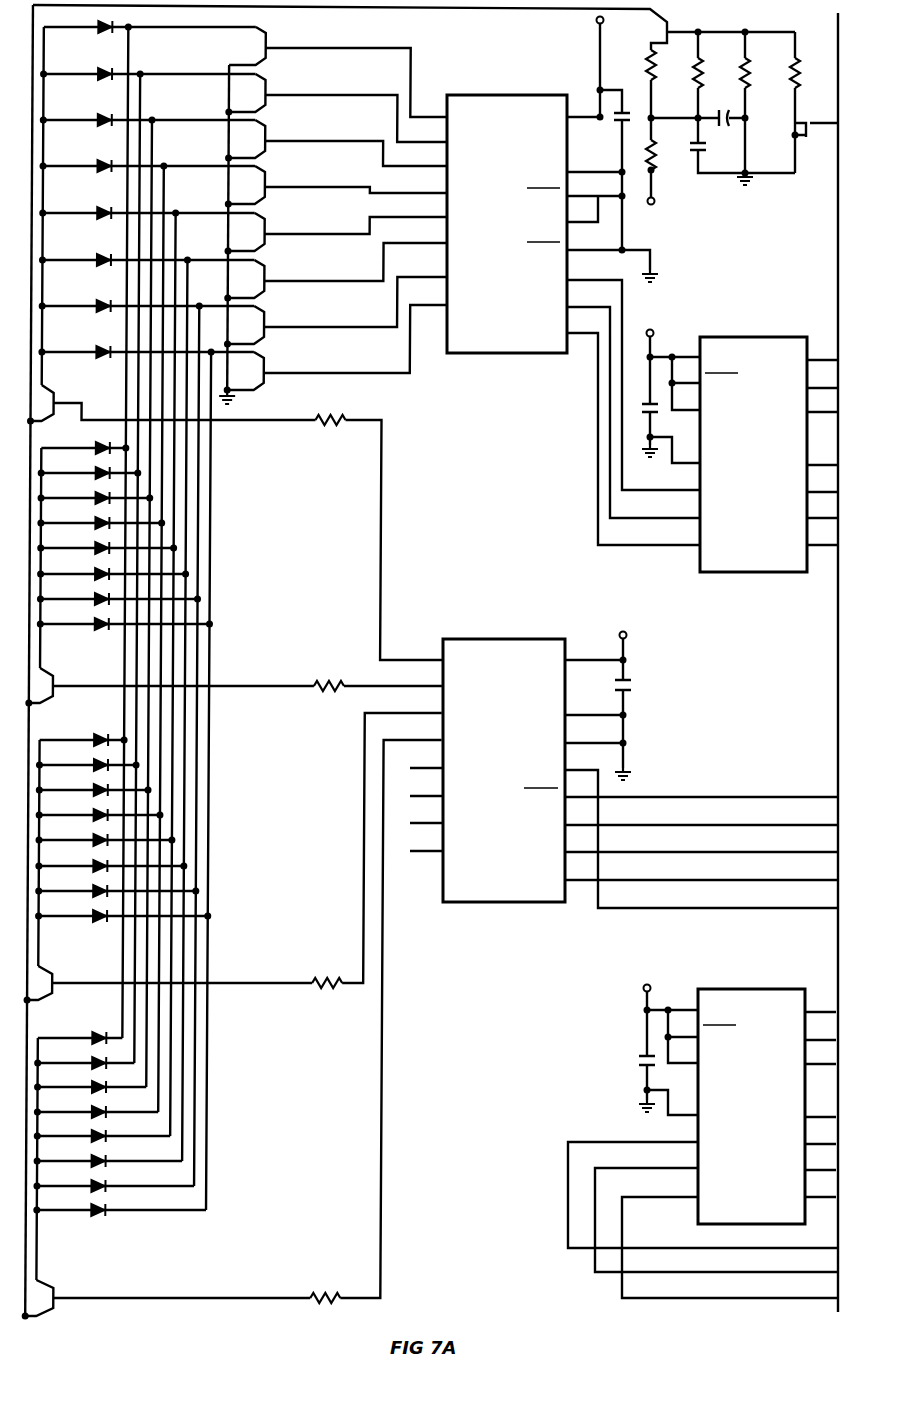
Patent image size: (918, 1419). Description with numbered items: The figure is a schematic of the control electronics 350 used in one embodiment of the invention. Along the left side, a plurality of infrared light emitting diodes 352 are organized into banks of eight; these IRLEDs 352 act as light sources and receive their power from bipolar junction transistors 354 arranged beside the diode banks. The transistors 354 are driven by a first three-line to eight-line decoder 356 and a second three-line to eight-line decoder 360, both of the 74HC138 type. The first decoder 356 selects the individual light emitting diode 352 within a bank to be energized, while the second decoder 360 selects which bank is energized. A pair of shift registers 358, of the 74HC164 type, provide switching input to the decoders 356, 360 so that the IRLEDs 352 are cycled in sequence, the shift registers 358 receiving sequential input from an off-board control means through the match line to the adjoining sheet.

The control electronics 350 is at (524, 1133).
The infrared light emitting diodes 352 is at (104, 67).
The bipolar junction transistors 354 is at (265, 47).
The first 3-line to 8-line decoder 356 is at (479, 95).
The shift registers 358 is at (735, 337).
The second 3-line to 8-line decoder 360 is at (473, 639).